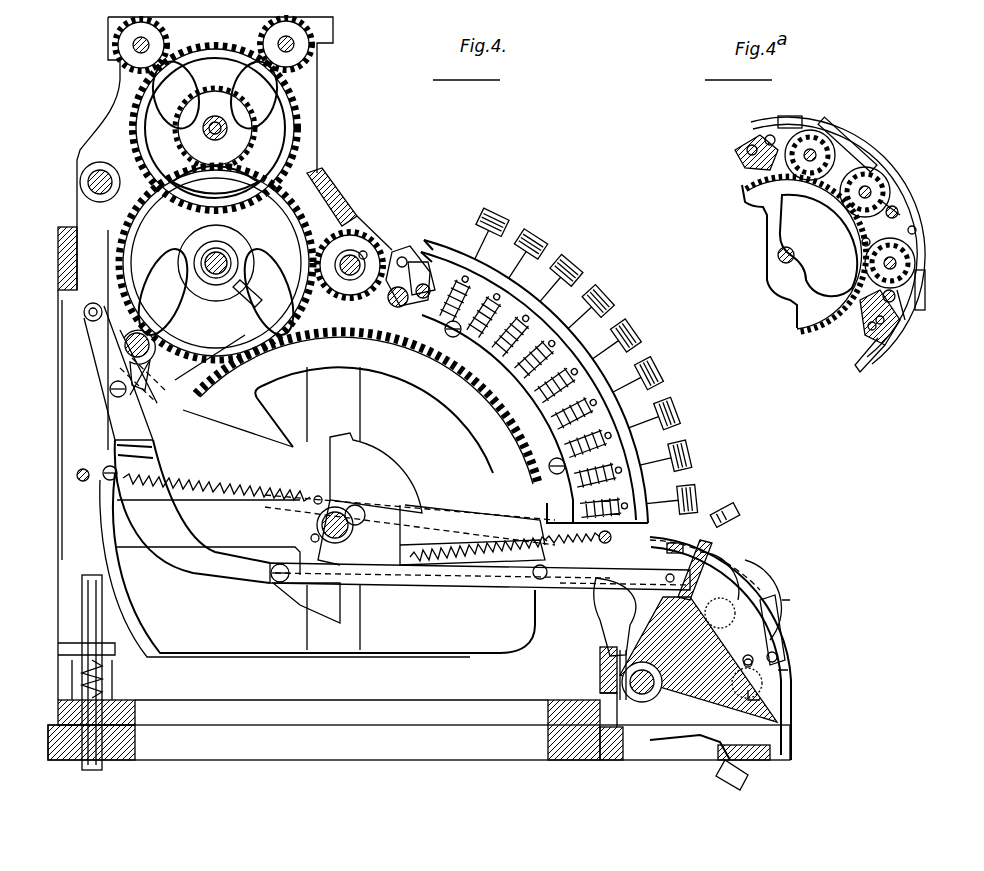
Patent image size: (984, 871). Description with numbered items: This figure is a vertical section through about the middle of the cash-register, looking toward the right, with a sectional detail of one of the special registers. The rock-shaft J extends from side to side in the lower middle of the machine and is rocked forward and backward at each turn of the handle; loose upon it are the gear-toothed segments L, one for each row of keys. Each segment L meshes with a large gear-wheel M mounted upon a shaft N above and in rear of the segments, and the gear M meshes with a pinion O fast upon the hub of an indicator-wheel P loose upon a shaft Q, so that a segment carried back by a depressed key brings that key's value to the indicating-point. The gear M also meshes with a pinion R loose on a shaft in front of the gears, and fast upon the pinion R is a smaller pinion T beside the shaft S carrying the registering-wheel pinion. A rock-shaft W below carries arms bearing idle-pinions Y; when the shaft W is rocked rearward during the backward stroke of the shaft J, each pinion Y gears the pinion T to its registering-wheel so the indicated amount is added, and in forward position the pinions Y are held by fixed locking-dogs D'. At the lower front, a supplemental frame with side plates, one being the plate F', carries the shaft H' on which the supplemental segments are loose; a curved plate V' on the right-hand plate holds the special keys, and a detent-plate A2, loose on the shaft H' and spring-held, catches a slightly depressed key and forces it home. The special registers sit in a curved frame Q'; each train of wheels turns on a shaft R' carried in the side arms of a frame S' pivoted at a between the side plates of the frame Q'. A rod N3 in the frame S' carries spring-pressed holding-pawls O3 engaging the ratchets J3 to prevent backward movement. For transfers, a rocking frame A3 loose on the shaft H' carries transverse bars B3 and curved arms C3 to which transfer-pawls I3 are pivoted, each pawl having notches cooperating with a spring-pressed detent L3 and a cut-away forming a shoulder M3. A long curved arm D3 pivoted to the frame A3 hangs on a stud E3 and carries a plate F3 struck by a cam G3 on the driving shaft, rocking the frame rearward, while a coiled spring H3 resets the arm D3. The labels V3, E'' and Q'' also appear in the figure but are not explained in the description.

In FIG. 4, the indicator-wheel P is at (300, 118).
In FIG. 4, the shaft Q is at (215, 128).
In FIG. 4, the pinion O is at (246, 124).
In FIG. 4, the gear-wheel M is at (122, 216).
In FIG. 4, the shaft N is at (205, 264).
In FIG. 4, the pinion R is at (350, 245).
In FIG. 4, the shaft S is at (350, 284).
In FIG. 4, the pinion T is at (368, 252).
In FIG. 4, the idle-pinion Y is at (405, 255).
In FIG. 4, the locking-dog D' is at (428, 277).
In FIG. 4, the rock-shaft W is at (410, 306).
In FIG. 4, the gear-toothed segment L is at (398, 368).
In FIG. 4, the transverse bar B3 is at (660, 548).
In FIG. 4, the stud E3 is at (84, 312).
In FIG. 4, the side plate F' is at (110, 360).
In FIG. 4, the cam G3 is at (122, 386).
In FIG. 4, the plate F3 is at (148, 385).
In FIG. 4, the rock-shaft J is at (342, 515).
In FIG. 4, the coiled spring H3 is at (470, 575).
In FIG. 4, the curved arm D3 is at (426, 577).
In FIG. 4, the rocking frame A3 is at (792, 710).
In FIG. 4, the detent-plate A2 is at (698, 659).
In FIG. 4, the curved frame Q' is at (604, 617).
In FIG. 4, the shaft H' is at (597, 675).
In FIG. 4, the key stem V3 is at (708, 560).
In FIG. 4, the plate V' is at (715, 605).
In FIG. 4, the transfer-pawl I3 is at (782, 628).
In FIG. 4A, the transfer-pawl I3 is at (845, 125).
In FIG. 4, the shoulder M3 is at (776, 660).
In FIG. 4A, the shoulder M3 is at (922, 222).
In FIG. 4, the detent L3 is at (786, 686).
In FIG. 4A, the detent L3 is at (858, 145).
In FIG. 4, the base piece E'' is at (690, 761).
In FIG. 4, the block Q'' is at (736, 767).
In FIG. 4A, the shaft R' is at (804, 253).
In FIG. 4A, the ratchet J3 is at (808, 140).
In FIG. 4A, the curved arm C3 is at (810, 120).
In FIG. 4A, the holding-pawl O3 is at (895, 190).
In FIG. 4A, the rod N3 is at (910, 200).
In FIG. 4A, the frame S' is at (804, 240).
In FIG. 4A, the pivot a is at (752, 140).